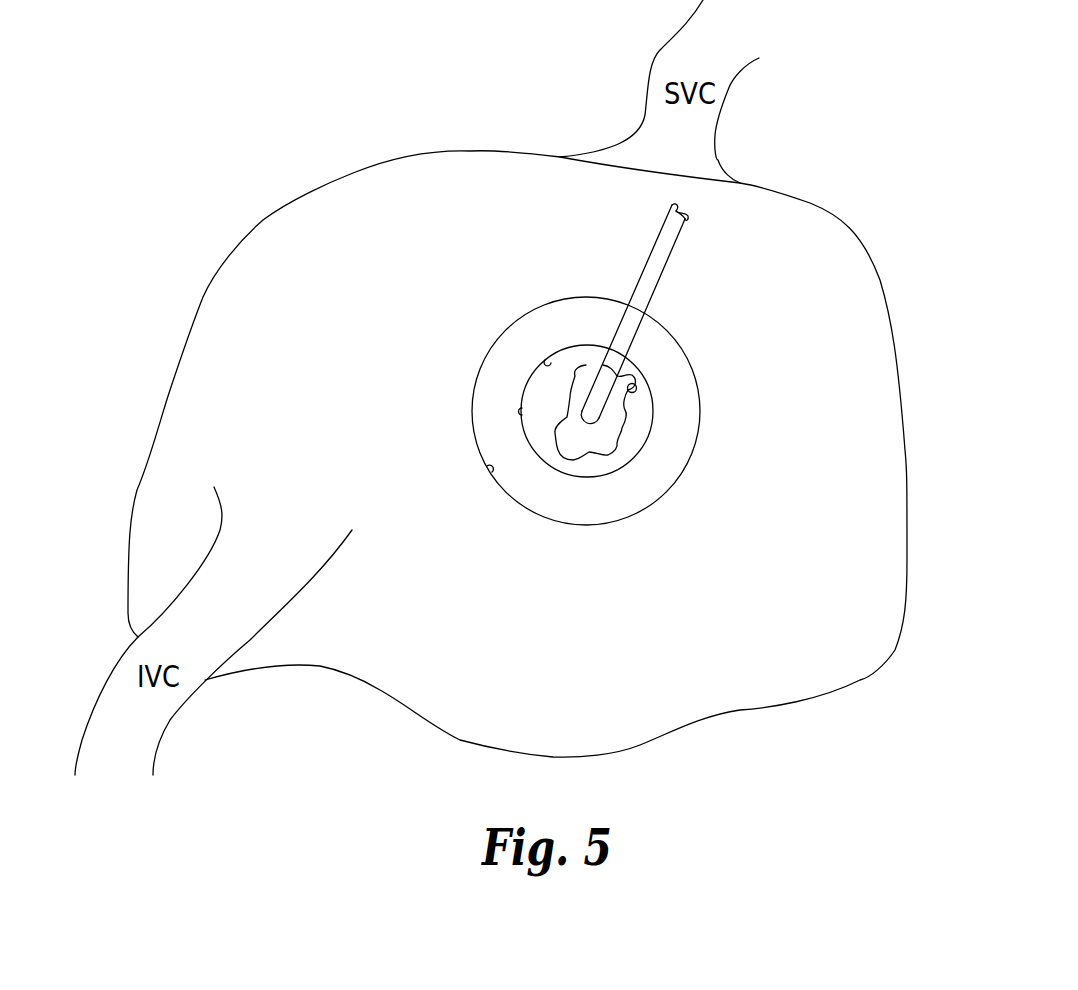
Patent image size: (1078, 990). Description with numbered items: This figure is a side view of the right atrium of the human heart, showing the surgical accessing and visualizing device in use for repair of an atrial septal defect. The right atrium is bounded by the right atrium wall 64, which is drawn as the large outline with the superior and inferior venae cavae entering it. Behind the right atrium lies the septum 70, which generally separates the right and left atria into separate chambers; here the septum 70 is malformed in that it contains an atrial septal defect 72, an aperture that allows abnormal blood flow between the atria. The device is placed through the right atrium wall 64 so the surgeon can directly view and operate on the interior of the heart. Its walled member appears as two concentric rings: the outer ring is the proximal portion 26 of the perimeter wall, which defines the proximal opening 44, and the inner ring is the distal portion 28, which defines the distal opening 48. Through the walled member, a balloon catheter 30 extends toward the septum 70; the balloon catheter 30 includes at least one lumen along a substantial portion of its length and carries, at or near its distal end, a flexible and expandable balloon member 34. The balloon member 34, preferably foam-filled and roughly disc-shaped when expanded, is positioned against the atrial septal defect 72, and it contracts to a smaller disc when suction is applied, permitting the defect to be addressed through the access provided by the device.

The proximal portion 26 is at (526, 503).
The distal portion 28 is at (520, 411).
The balloon catheter 30 is at (590, 420).
The balloon member 34 is at (605, 440).
The proximal opening 44 is at (488, 469).
The distal opening 48 is at (549, 357).
The right atrium wall 64 is at (860, 420).
The septum 70 is at (594, 357).
The atrial septal defect 72 is at (633, 385).